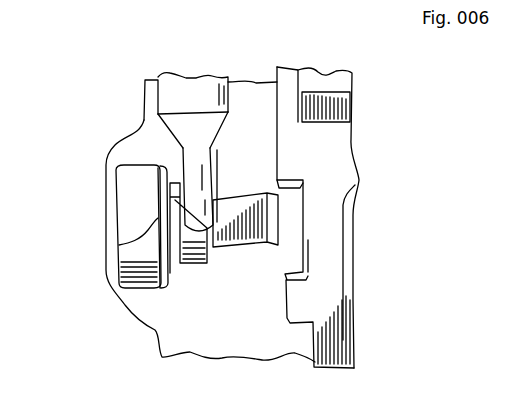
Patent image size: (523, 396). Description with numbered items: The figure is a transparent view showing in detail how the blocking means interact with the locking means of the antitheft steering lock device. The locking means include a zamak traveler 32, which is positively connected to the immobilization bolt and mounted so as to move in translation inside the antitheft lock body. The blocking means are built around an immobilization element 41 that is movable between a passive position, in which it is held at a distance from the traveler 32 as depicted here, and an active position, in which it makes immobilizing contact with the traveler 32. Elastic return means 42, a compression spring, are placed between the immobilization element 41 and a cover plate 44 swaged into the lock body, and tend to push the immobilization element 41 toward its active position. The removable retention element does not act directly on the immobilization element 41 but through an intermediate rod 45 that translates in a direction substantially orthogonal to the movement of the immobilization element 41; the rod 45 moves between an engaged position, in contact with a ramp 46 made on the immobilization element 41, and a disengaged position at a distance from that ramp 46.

The traveler 32 is at (326, 160).
The immobilization element 41 is at (277, 220).
The elastic return means 42 is at (118, 242).
The cover plate 44 is at (113, 272).
The rod 45 is at (168, 97).
The ramp 46 is at (157, 195).